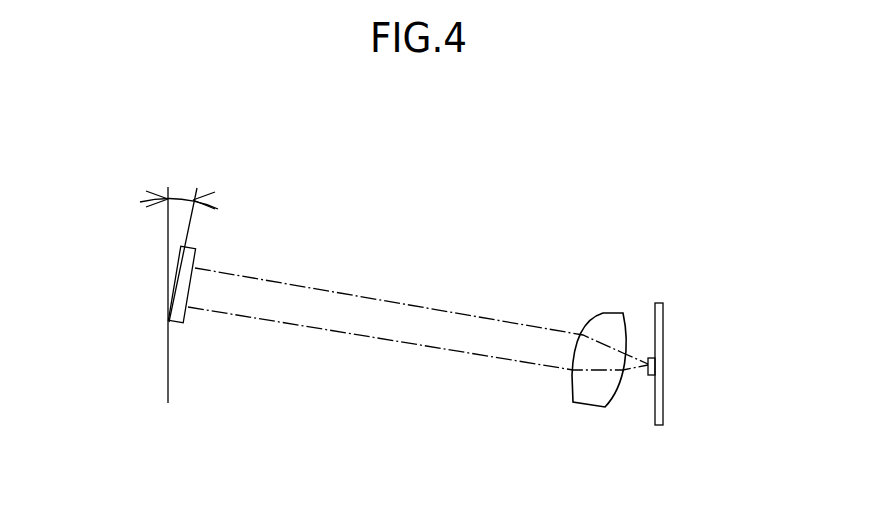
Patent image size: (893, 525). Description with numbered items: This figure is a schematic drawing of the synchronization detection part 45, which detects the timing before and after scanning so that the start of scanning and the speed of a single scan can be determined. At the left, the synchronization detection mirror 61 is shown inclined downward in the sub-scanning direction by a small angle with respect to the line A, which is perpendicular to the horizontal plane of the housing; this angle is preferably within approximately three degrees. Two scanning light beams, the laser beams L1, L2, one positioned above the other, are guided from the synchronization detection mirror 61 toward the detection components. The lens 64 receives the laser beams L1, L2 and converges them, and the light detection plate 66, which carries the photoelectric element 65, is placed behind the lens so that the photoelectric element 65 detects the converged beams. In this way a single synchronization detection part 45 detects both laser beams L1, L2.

The synchronization detection part 45 is at (408, 135).
The synchronization detection mirror 61 is at (185, 288).
The lens 64 is at (592, 398).
The photoelectric element 65 is at (655, 371).
The light detection plate 66 is at (658, 425).
The line perpendicular to the horizontal plane of the housing A is at (168, 352).
The laser beam L1 is at (343, 293).
The laser beam L2 is at (345, 333).